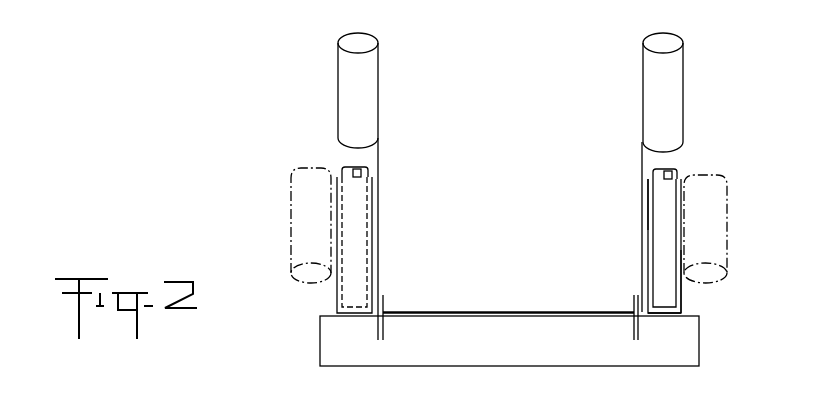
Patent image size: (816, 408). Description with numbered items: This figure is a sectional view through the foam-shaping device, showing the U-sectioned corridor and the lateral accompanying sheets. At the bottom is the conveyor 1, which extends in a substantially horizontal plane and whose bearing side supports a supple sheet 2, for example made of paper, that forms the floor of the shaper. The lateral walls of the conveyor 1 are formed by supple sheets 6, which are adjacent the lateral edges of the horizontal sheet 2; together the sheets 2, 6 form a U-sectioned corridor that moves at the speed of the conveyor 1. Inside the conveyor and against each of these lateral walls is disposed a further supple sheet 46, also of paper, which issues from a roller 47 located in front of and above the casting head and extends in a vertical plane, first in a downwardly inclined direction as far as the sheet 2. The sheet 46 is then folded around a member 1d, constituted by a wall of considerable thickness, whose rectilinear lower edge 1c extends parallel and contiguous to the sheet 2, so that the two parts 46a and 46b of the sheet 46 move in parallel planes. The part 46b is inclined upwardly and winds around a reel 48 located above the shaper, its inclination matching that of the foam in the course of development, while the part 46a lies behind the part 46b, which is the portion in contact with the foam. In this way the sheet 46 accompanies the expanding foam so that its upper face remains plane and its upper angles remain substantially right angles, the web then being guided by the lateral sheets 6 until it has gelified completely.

The conveyor 1 is at (507, 372).
The lower edge 1c is at (690, 313).
The member 1d is at (684, 167).
The supple sheet 2 is at (458, 314).
The supple sheets 6 is at (371, 232).
The supple sheet 46 is at (638, 243).
The part of sheet 46 46a is at (688, 292).
The part of sheet 46 46b is at (642, 168).
The roller 47 is at (712, 215).
The reel 48 is at (668, 46).